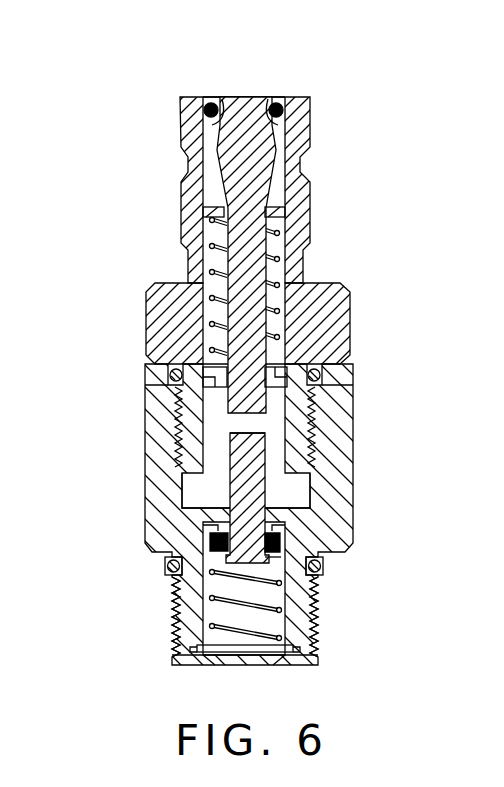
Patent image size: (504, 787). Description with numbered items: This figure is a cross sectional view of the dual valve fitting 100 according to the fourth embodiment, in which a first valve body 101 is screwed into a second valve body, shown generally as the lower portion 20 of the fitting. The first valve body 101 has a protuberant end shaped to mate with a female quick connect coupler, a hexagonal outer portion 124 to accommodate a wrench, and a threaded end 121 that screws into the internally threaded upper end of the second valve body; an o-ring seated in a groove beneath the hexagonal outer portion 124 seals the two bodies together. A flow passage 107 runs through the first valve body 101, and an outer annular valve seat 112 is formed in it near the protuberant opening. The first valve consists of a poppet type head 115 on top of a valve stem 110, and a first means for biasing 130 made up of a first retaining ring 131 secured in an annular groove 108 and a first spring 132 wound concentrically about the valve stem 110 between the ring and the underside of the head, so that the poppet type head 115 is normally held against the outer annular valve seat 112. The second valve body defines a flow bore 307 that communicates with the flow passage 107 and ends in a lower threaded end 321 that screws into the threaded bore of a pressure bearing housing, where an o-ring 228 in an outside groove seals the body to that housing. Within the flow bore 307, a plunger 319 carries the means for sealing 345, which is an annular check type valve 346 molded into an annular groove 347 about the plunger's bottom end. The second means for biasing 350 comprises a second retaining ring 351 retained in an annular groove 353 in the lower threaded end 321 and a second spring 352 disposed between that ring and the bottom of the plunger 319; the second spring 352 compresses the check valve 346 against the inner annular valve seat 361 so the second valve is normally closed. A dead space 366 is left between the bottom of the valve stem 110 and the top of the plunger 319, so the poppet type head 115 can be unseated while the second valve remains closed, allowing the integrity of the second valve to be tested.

The dual valve fitting 100 is at (165, 112).
The valve body 20 is at (183, 192).
The first valve body 101 is at (310, 108).
The valve stem 110 is at (260, 153).
The outer annular valve seat 112 is at (232, 97).
The poppet type head 115 is at (253, 97).
The flow passage 107 is at (277, 193).
The first means for biasing 130 is at (192, 268).
The first spring 132 is at (287, 237).
The hexagonal outer portion 124 is at (152, 328).
The first retaining ring 131 is at (350, 388).
The threaded end 121 is at (176, 428).
The annular groove 108 is at (285, 393).
The plunger 319 is at (240, 452).
The dead space 366 is at (257, 422).
The flow bore 307 is at (218, 488).
The inner annular valve seat 361 is at (308, 502).
The means for sealing 345 is at (192, 537).
The annular check type valve 346 is at (167, 563).
The annular groove 347 is at (272, 558).
The o-ring 228 is at (320, 570).
The second means for biasing 350 is at (212, 613).
The lower threaded end 321 is at (308, 610).
The second spring 352 is at (207, 648).
The second retaining ring 351 is at (197, 650).
The annular groove 353 is at (278, 664).